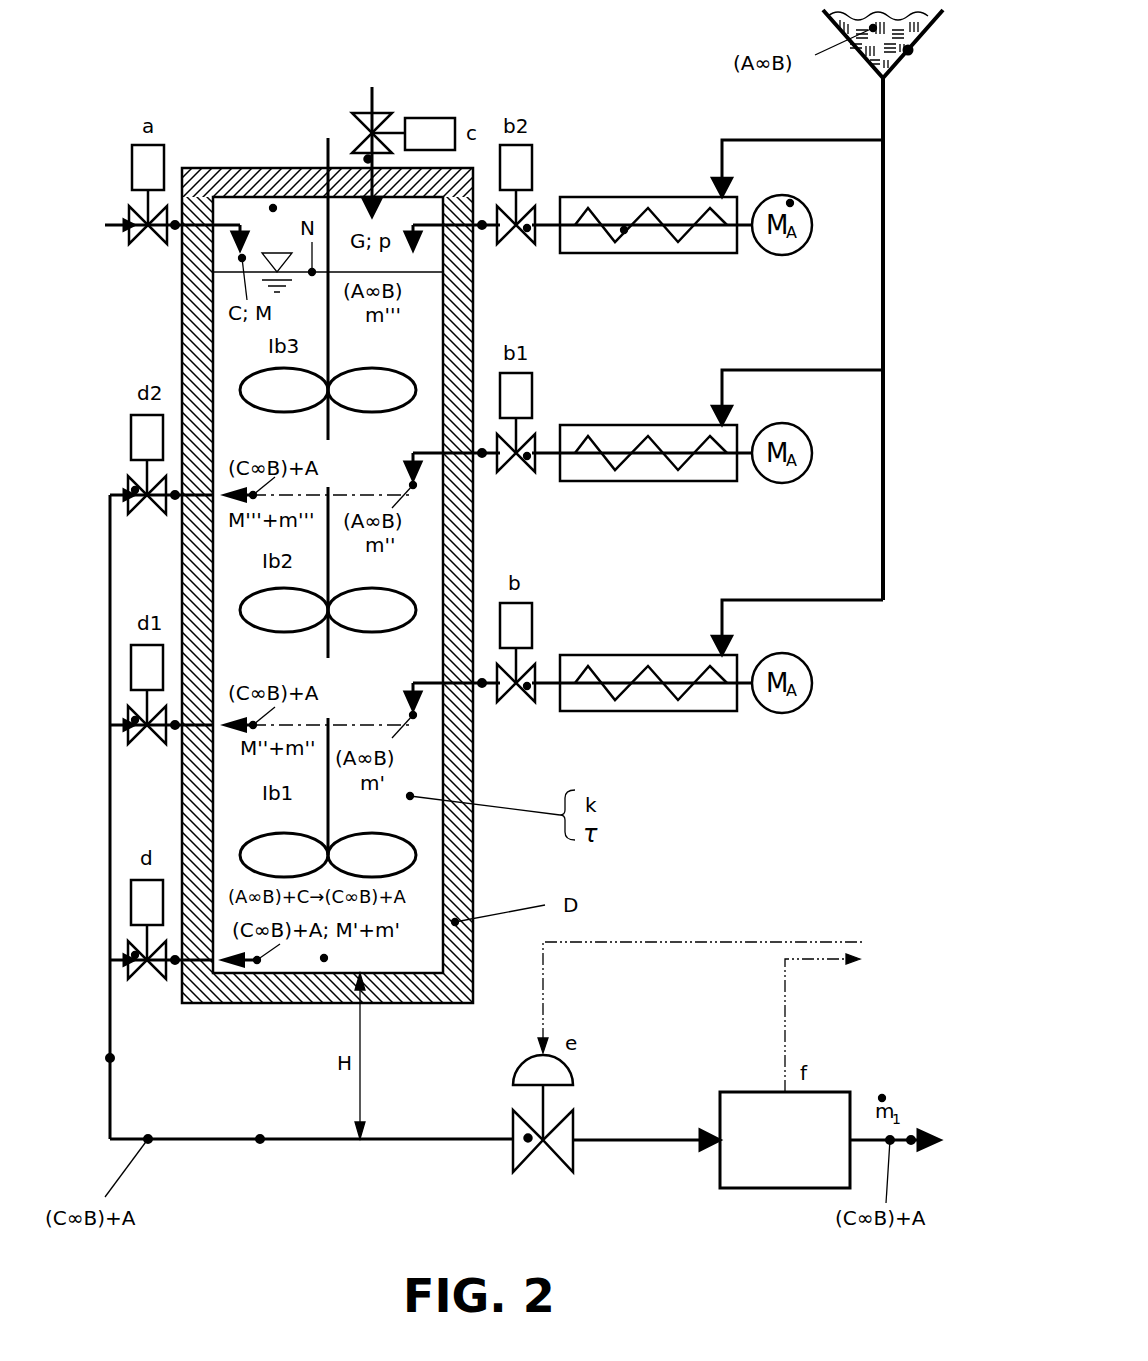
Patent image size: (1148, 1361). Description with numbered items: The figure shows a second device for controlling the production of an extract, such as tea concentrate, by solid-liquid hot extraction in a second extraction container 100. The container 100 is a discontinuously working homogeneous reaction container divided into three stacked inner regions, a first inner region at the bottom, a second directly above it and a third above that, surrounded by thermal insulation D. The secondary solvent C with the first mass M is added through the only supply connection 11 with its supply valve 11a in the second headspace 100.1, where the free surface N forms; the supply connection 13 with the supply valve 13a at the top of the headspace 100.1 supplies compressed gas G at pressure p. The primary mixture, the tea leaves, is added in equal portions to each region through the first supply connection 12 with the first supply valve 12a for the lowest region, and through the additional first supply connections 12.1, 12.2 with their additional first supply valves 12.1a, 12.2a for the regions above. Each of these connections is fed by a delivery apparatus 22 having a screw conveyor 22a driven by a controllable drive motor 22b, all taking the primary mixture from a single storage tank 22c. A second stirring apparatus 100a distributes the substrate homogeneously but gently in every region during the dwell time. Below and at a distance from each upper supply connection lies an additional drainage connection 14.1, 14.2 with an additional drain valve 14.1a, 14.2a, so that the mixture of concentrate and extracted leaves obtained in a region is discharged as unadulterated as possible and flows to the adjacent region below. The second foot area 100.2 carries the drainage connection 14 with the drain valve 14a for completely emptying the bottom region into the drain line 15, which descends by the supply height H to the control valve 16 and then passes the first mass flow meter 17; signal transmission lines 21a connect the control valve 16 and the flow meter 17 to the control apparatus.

The second extraction container 100 is at (422, 1030).
The second headspace 100.1 is at (273, 208).
The second foot area 100.2 is at (324, 958).
The second stirring apparatus 100a is at (328, 507).
The supply connection 11 is at (175, 228).
The supply valve 11a is at (135, 243).
The first supply connection 12 is at (482, 683).
The first supply valve 12a is at (527, 690).
The additional first supply connection 12.1 is at (482, 453).
The additional first supply valve 12.1a is at (527, 460).
The additional first supply connection 12.2 is at (482, 225).
The additional first supply valve 12.2a is at (527, 232).
The supply connection 13 is at (345, 152).
The supply valve 13a is at (365, 123).
The drainage connection 14 is at (172, 968).
The drain valve 14a is at (135, 955).
The additional drainage connection 14.1 is at (175, 733).
The additional drain valve 14.1a is at (135, 720).
The additional drainage connection 14.2 is at (175, 503).
The additional drain valve 14.2a is at (135, 490).
The drain line 15 is at (260, 1139).
The control valve 16 is at (528, 1138).
The first mass flow meter 17 is at (785, 1140).
The signal transmission lines 21a is at (872, 940).
The delivery apparatus 22 is at (708, 266).
The screw conveyor 22a is at (624, 230).
The controllable drive motor 22b is at (790, 203).
The storage tank 22c is at (908, 50).